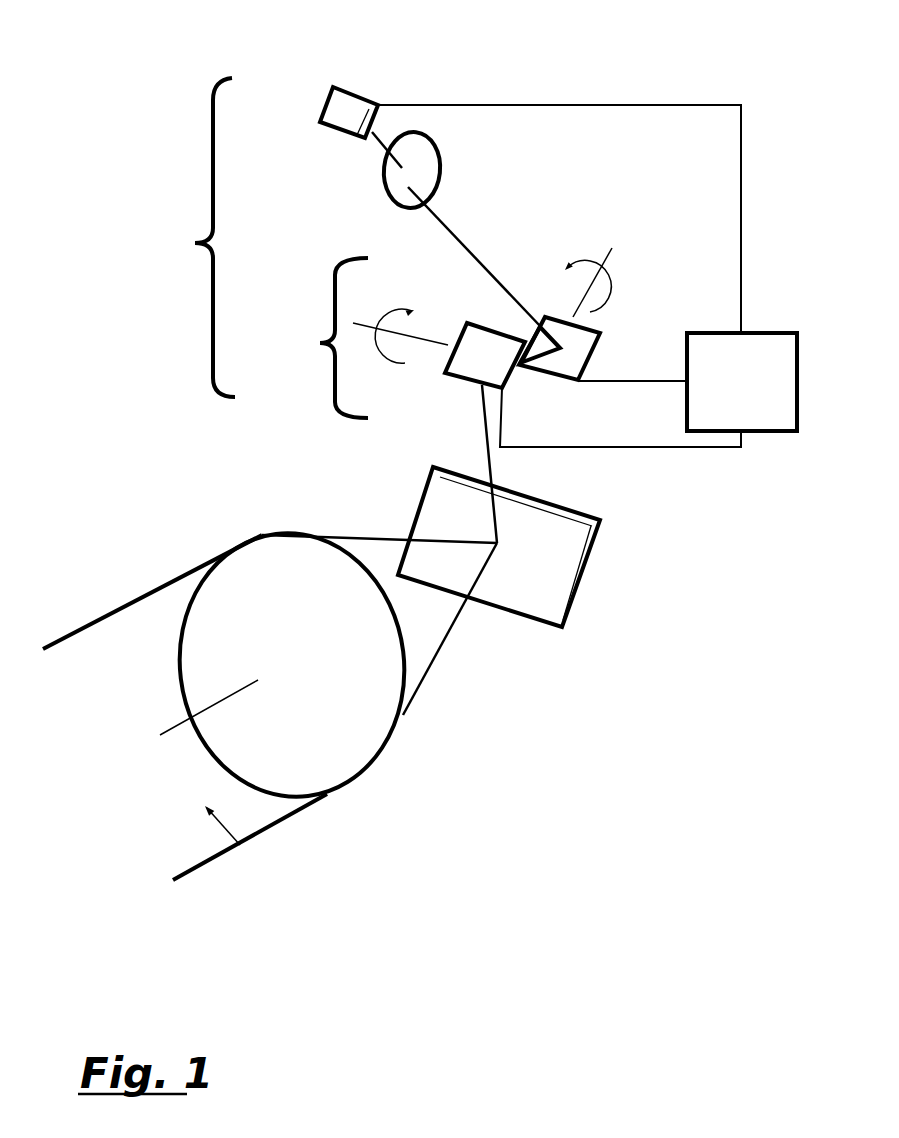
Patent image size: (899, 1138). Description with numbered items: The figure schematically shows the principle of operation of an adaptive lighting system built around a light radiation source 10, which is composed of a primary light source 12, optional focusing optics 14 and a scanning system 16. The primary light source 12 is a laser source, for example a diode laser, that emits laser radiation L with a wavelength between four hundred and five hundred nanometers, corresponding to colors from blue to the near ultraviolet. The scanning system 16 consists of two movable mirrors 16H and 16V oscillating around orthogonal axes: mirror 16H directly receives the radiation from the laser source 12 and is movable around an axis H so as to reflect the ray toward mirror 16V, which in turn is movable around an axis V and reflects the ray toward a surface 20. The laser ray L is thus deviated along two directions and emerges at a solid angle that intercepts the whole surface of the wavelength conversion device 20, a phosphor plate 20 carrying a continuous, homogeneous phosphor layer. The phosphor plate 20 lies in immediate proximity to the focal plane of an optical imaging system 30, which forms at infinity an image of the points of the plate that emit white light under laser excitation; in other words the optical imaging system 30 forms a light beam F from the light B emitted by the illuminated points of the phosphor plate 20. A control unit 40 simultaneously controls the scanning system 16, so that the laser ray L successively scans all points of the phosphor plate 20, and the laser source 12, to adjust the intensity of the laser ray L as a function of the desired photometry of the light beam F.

The light radiation source 10 is at (193, 237).
The primary light source 12 is at (343, 107).
The focusing optics 14 is at (397, 200).
The scanning system 16 is at (319, 338).
The mirror 16V is at (470, 391).
The mirror 16H is at (596, 354).
The phosphor plate 20 is at (583, 600).
The optical imaging system 30 is at (360, 783).
The control unit 40 is at (777, 433).
The laser radiation L is at (480, 247).
The axis H is at (599, 268).
The axis V is at (400, 329).
The light B is at (440, 657).
The light beam F is at (240, 845).